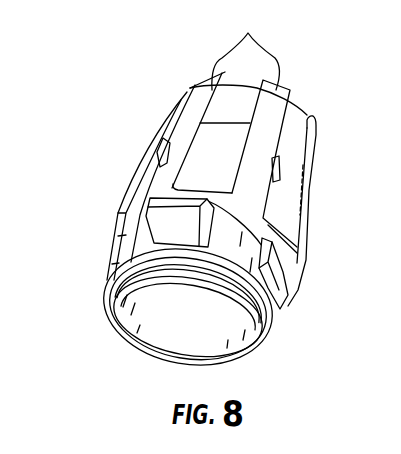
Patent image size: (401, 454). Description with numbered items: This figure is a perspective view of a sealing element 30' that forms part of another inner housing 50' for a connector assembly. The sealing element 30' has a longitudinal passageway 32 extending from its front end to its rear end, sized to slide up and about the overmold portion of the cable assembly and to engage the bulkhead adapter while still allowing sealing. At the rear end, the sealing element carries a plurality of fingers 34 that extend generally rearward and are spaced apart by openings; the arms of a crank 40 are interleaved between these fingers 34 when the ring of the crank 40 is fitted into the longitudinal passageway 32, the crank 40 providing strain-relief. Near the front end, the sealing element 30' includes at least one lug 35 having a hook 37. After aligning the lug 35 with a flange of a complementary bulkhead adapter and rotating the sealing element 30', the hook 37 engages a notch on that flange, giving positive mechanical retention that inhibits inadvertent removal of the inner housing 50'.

The inner housing 50' is at (169, 156).
The fingers 34 is at (248, 33).
The lug 35 is at (165, 210).
The hook 37 is at (148, 203).
The crank 40 is at (290, 202).
The sealing element 30' is at (309, 283).
The longitudinal passageway 32 is at (169, 325).